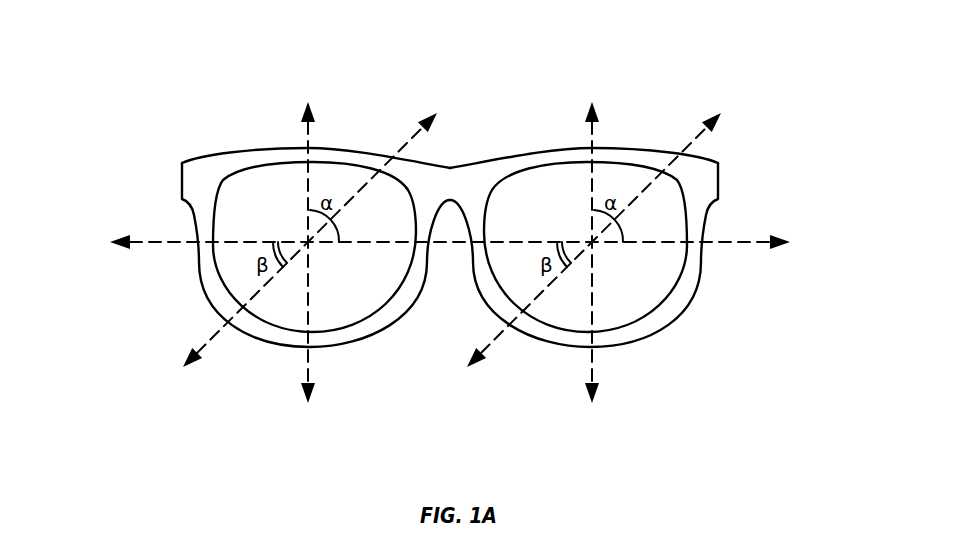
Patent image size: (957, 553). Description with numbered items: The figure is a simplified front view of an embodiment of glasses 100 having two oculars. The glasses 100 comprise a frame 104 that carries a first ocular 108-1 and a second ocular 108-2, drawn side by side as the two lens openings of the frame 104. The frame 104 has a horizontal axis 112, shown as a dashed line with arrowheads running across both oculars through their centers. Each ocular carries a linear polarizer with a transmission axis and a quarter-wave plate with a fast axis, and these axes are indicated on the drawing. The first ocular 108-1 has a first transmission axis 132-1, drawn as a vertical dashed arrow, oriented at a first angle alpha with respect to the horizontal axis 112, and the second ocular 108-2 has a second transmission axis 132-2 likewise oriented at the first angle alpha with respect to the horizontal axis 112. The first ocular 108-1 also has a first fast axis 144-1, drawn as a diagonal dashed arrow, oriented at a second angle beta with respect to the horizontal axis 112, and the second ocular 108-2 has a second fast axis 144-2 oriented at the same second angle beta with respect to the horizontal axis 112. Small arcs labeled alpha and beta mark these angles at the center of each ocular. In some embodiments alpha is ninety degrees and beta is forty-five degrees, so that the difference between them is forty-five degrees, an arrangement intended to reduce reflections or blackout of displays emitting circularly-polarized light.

The glasses 100 is at (126, 67).
The frame 104 is at (207, 168).
The first ocular 108-1 is at (642, 293).
The second ocular 108-2 is at (337, 297).
The horizontal axis 112 is at (800, 242).
The first transmission axis 132-1 is at (598, 117).
The second transmission axis 132-2 is at (312, 107).
The first fast axis 144-1 is at (720, 118).
The second fast axis 144-2 is at (436, 118).